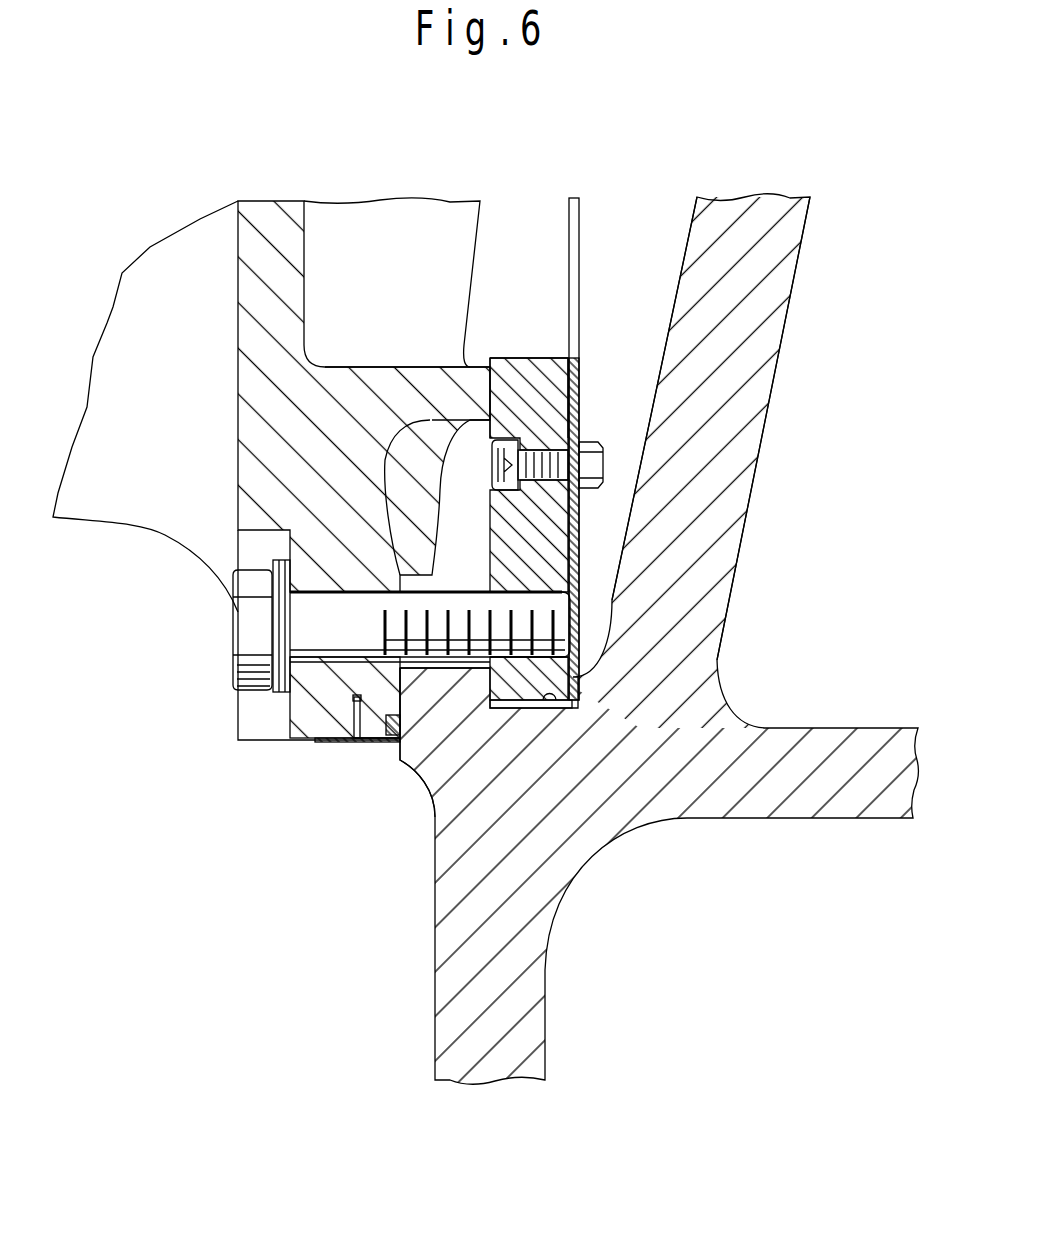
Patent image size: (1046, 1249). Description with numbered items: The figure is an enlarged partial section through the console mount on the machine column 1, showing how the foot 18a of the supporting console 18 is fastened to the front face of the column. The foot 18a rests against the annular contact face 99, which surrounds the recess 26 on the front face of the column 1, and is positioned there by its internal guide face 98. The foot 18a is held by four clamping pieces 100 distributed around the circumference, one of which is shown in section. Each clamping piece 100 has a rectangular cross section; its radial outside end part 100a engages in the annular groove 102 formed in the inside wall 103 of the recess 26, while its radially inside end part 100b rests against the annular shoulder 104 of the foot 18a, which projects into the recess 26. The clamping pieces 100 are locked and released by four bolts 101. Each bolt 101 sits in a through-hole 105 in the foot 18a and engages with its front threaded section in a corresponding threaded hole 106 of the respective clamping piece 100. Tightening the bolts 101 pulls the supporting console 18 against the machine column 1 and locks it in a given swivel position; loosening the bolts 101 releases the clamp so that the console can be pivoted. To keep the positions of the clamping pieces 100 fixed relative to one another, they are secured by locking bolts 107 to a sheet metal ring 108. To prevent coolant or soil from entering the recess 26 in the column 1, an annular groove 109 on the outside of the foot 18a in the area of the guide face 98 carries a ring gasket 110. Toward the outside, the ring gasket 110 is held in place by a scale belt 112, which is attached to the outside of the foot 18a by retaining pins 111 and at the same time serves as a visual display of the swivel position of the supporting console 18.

The machine column 1 is at (522, 1032).
The supporting console 18 is at (120, 532).
The foot 18a is at (267, 390).
The recess 26 is at (640, 352).
The internal guide face 98 is at (403, 703).
The annular contact face 99 is at (397, 745).
The clamping piece 100 is at (553, 533).
The radial outside end part 100a is at (567, 678).
The radially inside end part 100b is at (527, 377).
The bolt 101 is at (243, 628).
The annular groove 102 is at (563, 710).
The inside wall 103 is at (520, 710).
The annular shoulder 104 is at (468, 387).
The through-hole 105 is at (315, 590).
The threaded hole 106 is at (520, 587).
The locking bolt 107 is at (605, 463).
The sheet metal ring 108 is at (577, 233).
The annular groove 109 is at (393, 710).
The ring gasket 110 is at (370, 742).
The retaining pin 111 is at (358, 720).
The scale belt 112 is at (320, 742).